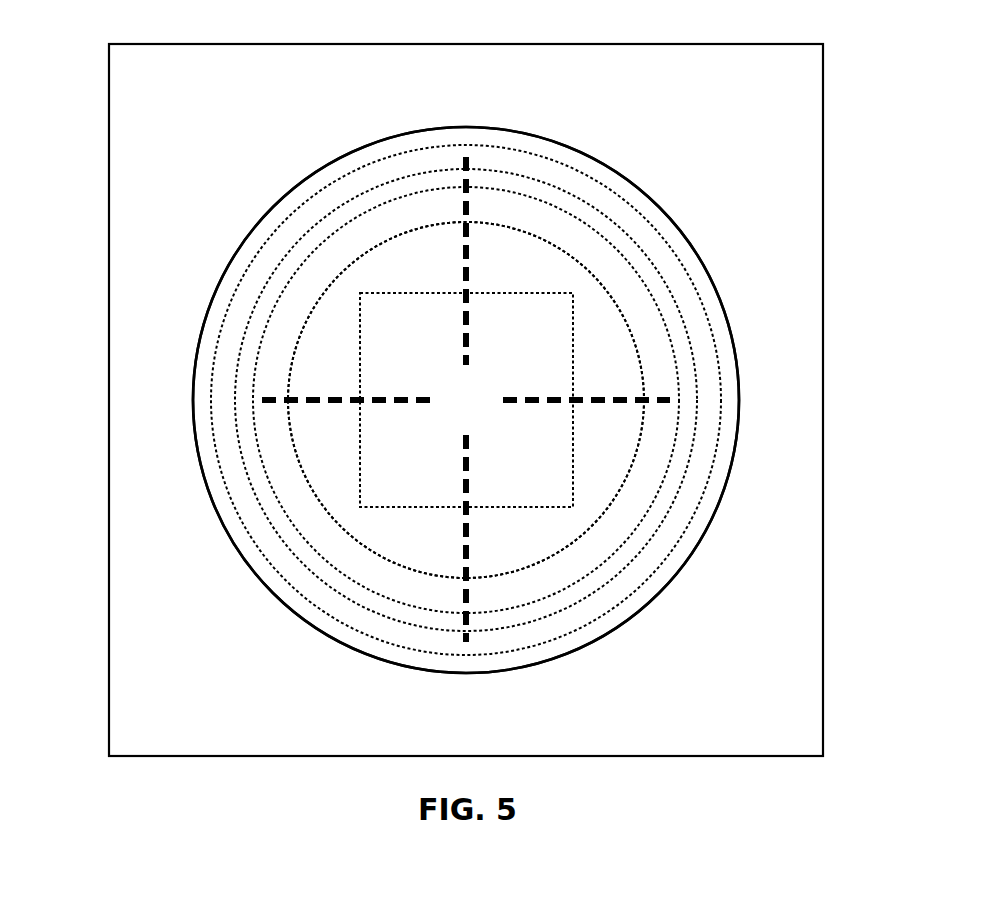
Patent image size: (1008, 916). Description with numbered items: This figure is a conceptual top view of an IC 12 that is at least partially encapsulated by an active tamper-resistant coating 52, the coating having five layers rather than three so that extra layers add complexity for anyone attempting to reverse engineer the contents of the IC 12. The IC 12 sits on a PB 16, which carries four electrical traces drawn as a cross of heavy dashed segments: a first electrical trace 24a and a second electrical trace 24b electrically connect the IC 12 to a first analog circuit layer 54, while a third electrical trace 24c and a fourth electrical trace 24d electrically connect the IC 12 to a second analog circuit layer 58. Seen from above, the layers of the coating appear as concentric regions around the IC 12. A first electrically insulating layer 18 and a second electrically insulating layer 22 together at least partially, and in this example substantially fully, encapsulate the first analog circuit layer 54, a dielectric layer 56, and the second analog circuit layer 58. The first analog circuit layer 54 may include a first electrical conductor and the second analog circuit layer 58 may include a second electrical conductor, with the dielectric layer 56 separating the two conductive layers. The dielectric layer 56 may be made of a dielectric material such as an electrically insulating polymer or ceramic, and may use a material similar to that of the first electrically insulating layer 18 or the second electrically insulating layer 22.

The IC 12 is at (360, 363).
The PB 16 is at (109, 116).
The first electrically insulating layer 18 is at (610, 346).
The second electrically insulating layer 22 is at (728, 418).
The first electrical trace 24a is at (312, 400).
The second electrical trace 24b is at (617, 400).
The third electrical trace 24c is at (466, 552).
The fourth electrical trace 24d is at (466, 262).
The active tamper-resistant coating 52 is at (228, 240).
The first analog circuit layer 54 is at (625, 293).
The dielectric layer 56 is at (240, 363).
The second analog circuit layer 58 is at (223, 422).